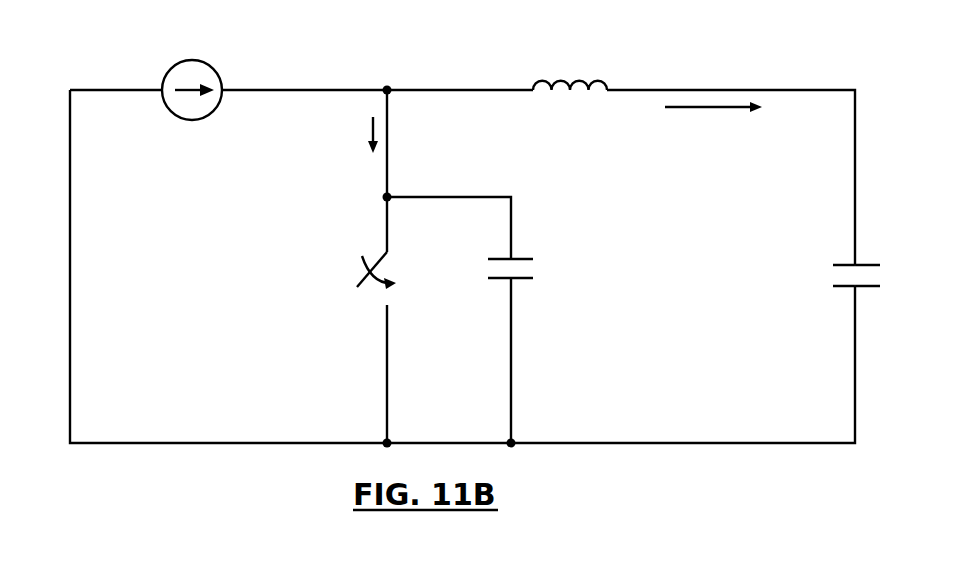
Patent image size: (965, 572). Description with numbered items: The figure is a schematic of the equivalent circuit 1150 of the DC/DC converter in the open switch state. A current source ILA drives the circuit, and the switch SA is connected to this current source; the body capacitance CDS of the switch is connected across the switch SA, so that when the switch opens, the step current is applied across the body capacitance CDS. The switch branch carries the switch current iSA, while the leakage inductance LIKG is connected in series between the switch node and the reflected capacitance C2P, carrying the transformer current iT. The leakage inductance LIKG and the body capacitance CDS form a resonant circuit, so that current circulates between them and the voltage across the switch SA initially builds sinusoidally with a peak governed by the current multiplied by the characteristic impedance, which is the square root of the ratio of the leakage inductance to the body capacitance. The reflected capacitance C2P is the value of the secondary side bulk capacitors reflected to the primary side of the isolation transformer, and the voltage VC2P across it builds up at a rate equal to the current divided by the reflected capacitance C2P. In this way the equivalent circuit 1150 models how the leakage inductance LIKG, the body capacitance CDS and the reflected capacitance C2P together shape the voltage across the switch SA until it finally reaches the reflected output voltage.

The equivalent circuit 1150 is at (772, 55).
The current source ILA is at (192, 68).
The switch current iSA is at (360, 133).
The leakage inductance LIKG is at (570, 104).
The transformer current iT is at (713, 123).
The switch SA is at (360, 259).
The body capacitance CDS is at (531, 270).
The reflected capacitance C2P is at (889, 275).
The voltage across reflected capacitance VC2P is at (804, 275).